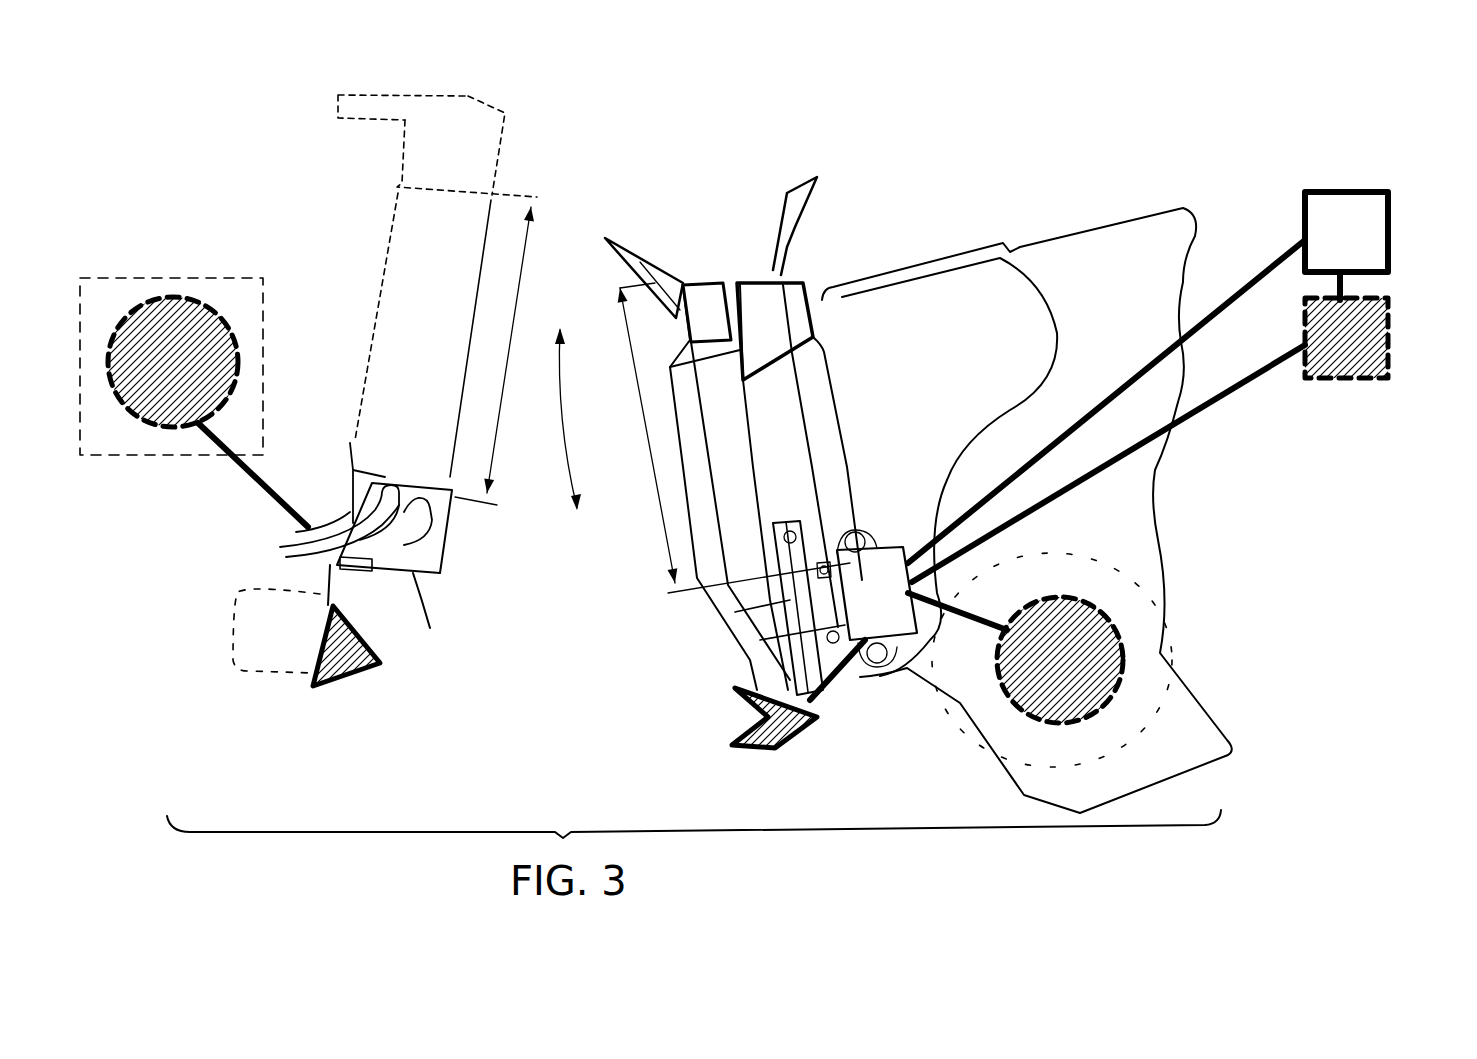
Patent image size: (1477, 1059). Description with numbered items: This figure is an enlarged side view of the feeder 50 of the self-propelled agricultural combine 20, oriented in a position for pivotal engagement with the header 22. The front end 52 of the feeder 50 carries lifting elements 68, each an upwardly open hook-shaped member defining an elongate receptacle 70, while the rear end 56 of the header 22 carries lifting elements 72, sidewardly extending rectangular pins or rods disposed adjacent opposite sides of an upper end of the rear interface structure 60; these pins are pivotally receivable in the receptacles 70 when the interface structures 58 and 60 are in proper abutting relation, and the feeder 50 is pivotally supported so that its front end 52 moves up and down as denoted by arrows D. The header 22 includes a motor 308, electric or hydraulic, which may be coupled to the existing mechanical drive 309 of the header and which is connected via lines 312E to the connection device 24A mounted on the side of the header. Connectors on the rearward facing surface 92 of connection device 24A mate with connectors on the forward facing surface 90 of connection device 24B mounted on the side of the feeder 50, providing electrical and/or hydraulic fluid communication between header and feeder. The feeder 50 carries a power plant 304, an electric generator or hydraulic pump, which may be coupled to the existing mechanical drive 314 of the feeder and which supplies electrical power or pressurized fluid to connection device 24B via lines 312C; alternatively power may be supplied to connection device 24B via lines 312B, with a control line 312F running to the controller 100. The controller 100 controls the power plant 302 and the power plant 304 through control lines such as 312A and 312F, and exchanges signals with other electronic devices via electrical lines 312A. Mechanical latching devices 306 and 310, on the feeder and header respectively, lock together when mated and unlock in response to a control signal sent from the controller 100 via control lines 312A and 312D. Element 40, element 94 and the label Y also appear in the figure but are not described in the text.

The self-propelled agricultural combine 20 is at (1105, 220).
The header 22 is at (405, 102).
The connection device 24A is at (408, 583).
The connection device 24B is at (863, 577).
The cable 40 is at (318, 512).
The feeder 50 is at (1023, 243).
The front end 52 is at (852, 270).
The rear end 56 is at (340, 88).
The interface structure 58 is at (690, 457).
The rear interface structure 60 is at (385, 262).
The lifting elements 68 is at (610, 267).
The receptacle 70 is at (700, 268).
The lifting elements 72 is at (467, 100).
The forward facing surface 90 is at (833, 617).
The rearward facing surface 92 is at (443, 546).
The fastener 94 is at (830, 537).
The controller 100 is at (1330, 192).
The power plant 302 is at (1368, 382).
The power plant 304 is at (1070, 727).
The mechanical latching device 306 is at (737, 742).
The motor 308 is at (165, 305).
The existing mechanical drive 309 is at (265, 390).
The mechanical latching device 310 is at (313, 685).
The control lines 312A is at (1220, 300).
The lines 312B is at (1237, 393).
The lines 312C is at (970, 617).
The control lines 312D is at (850, 673).
The lines 312E is at (222, 457).
The control line 312F is at (1347, 283).
The existing mechanical drive 314 is at (1167, 682).
The arrows D is at (568, 392).
The dimension Y is at (665, 537).